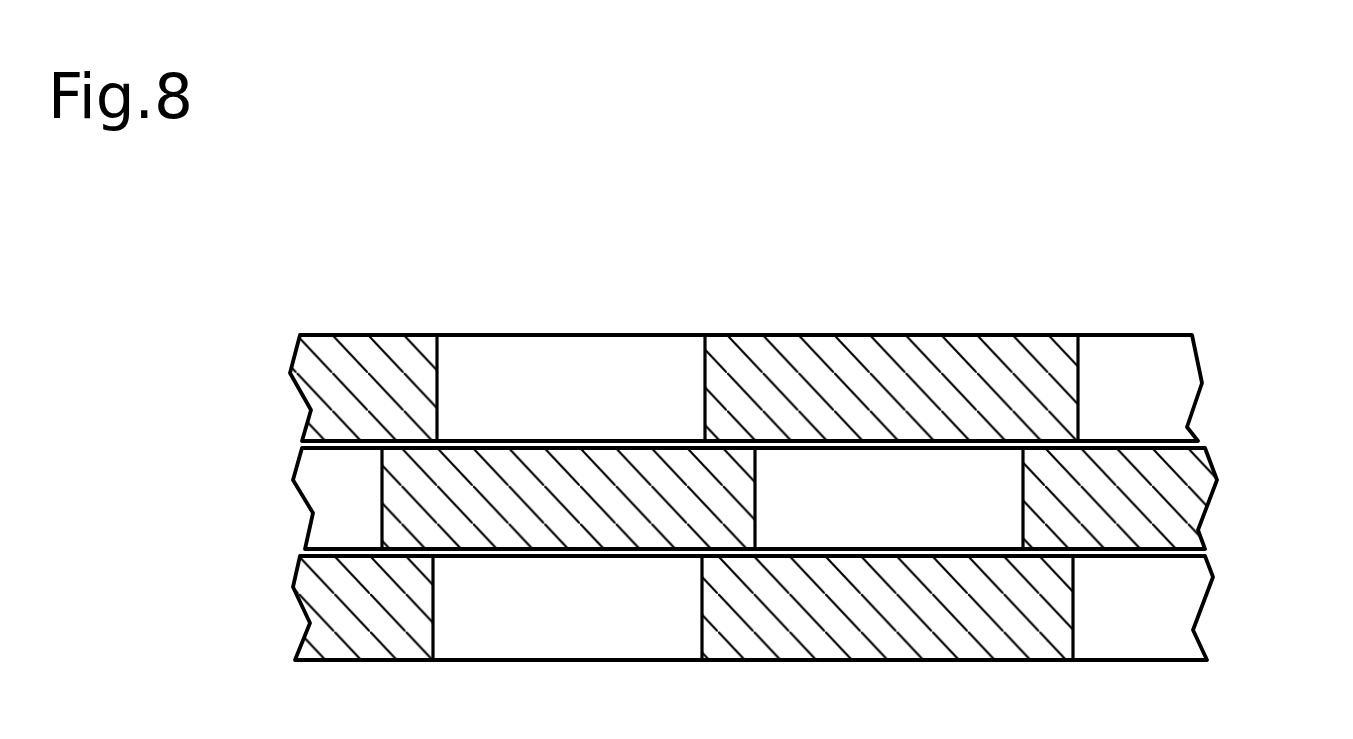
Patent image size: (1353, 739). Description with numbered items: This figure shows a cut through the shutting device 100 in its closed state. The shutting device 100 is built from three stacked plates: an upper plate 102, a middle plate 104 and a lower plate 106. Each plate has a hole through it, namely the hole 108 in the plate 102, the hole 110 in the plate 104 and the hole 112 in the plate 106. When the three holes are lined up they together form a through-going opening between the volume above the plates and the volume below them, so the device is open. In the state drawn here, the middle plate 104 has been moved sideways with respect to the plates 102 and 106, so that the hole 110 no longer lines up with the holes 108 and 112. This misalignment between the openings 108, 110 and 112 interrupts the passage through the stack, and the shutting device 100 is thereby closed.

The shutting device 100 is at (643, 267).
The plate 102 is at (897, 333).
The plate 104 is at (1212, 463).
The plate 106 is at (1073, 621).
The hole 108 is at (571, 388).
The hole 110 is at (889, 498).
The hole 112 is at (567, 608).